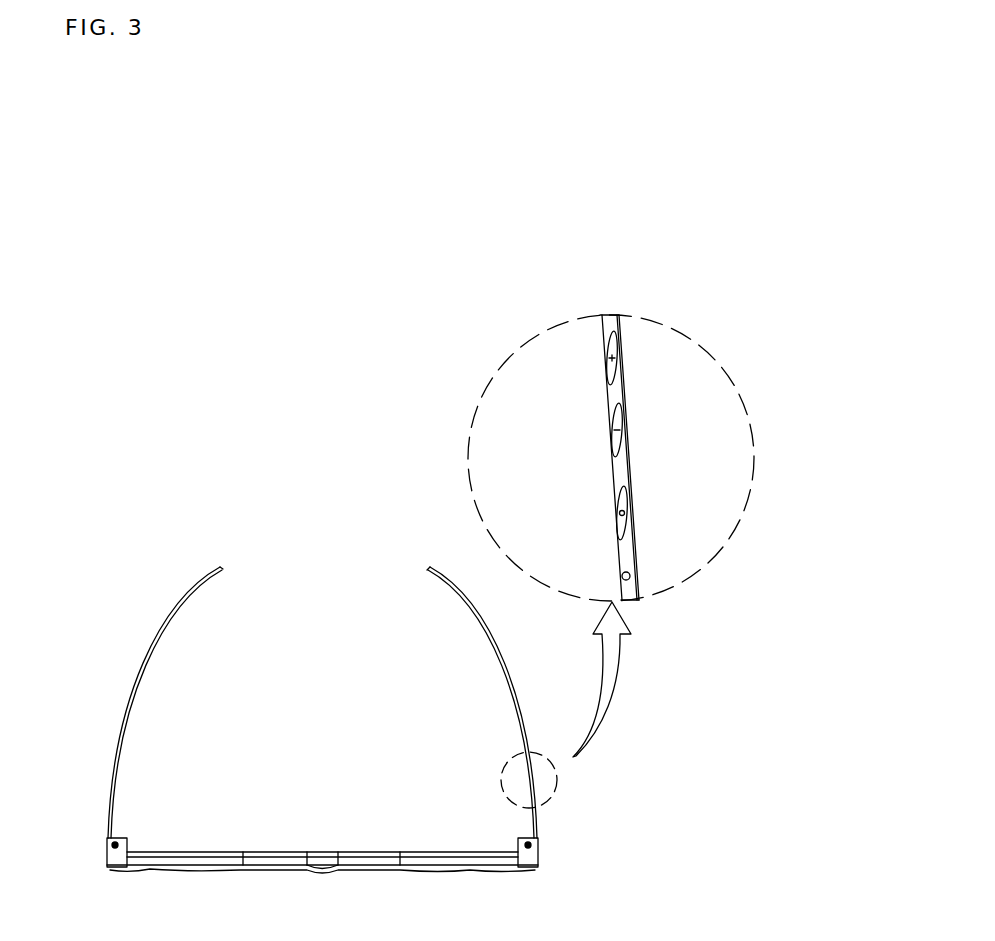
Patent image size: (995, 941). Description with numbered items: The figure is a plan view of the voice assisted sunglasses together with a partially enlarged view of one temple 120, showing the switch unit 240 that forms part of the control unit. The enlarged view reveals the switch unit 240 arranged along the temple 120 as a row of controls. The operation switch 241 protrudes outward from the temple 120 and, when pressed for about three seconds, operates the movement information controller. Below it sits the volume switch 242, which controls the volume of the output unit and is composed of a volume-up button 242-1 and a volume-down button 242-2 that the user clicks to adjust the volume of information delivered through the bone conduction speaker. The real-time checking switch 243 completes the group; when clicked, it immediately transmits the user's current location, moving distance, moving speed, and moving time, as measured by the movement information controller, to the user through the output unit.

The temple 120 is at (563, 813).
The switch unit 240 is at (453, 458).
The operation switch 241 is at (612, 500).
The volume switch 242 is at (437, 394).
The volume-up button 242-1 is at (607, 373).
The volume-down button 242-2 is at (610, 440).
The real-time checking switch 243 is at (624, 574).